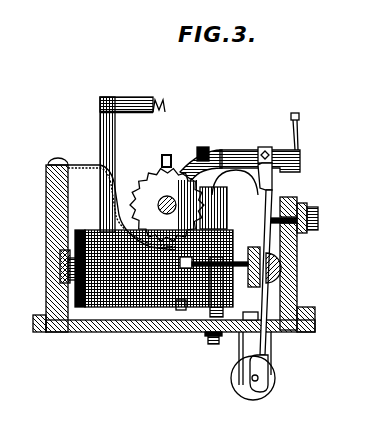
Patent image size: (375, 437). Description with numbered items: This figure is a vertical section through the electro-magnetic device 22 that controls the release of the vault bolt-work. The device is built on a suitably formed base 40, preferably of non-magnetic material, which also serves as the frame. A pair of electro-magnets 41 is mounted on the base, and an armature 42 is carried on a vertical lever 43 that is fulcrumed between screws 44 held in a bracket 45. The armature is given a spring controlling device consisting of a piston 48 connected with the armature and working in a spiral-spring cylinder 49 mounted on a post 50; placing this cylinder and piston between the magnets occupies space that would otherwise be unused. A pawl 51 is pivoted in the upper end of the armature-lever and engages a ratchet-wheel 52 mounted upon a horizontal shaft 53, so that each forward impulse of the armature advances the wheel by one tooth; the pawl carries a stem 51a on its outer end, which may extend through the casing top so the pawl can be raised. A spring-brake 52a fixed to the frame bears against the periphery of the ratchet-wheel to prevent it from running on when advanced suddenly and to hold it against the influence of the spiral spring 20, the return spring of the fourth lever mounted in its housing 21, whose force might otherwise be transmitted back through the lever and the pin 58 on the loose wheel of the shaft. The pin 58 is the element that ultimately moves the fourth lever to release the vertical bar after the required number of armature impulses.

The spiral spring 20 is at (165, 104).
The housing 21 is at (126, 156).
The electro-magnetic device 22 is at (219, 176).
The base 40 is at (47, 205).
The electro-magnets 41 is at (97, 311).
The armature 42 is at (266, 286).
The vertical lever 43 is at (268, 187).
The screws 44 is at (262, 380).
The bracket 45 is at (245, 386).
The piston 48 is at (238, 255).
The spiral-spring cylinder 49 is at (182, 312).
The post 50 is at (210, 322).
The pawl 51 is at (243, 158).
The stem 51a is at (299, 116).
The ratchet-wheel 52 is at (164, 156).
The spring-brake 52a is at (79, 164).
The horizontal shaft 53 is at (162, 199).
The pin 58 is at (193, 150).